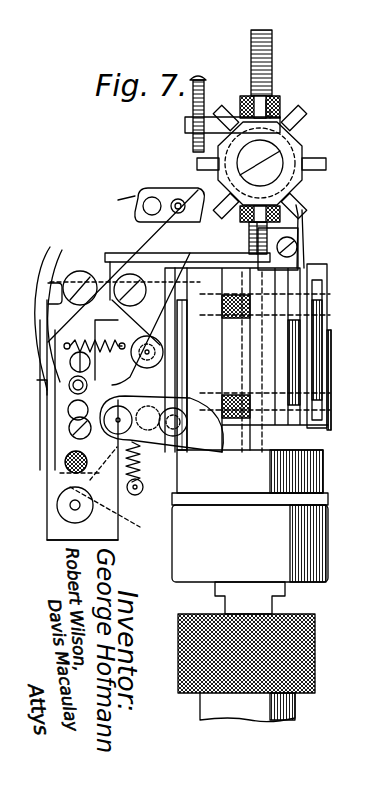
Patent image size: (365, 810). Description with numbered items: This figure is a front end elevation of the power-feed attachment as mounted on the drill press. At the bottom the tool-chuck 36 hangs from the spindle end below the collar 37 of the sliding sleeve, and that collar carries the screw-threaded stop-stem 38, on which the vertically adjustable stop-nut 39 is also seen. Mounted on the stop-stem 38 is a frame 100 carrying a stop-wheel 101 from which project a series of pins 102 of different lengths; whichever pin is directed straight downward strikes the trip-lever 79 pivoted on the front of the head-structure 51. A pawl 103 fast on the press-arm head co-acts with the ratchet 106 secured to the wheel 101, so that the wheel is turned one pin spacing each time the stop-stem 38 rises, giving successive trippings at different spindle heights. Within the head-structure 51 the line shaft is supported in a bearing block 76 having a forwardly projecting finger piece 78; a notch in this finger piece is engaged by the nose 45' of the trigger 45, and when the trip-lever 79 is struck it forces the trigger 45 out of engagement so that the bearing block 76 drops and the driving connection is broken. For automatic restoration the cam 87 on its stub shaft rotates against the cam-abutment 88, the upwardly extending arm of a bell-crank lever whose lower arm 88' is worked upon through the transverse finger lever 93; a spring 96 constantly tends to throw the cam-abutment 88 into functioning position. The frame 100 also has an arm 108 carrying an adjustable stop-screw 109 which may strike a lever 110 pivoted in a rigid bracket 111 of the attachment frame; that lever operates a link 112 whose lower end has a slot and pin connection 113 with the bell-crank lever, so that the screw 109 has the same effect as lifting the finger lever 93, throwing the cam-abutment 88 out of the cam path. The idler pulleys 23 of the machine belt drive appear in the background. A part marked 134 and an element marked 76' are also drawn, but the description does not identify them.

The stop-stem 38 is at (272, 48).
The adjustable stop-screw 109 is at (204, 90).
The frame 100 is at (290, 140).
The pins 102 is at (305, 120).
The stop-wheel 101 is at (300, 145).
The arm 108 is at (185, 125).
The ratchet 106 is at (197, 164).
The stop-nut 39 is at (300, 220).
The lever 110 is at (150, 188).
The rigid bracket 111 is at (118, 200).
The trip-lever 79 is at (112, 253).
The pawl 103 is at (297, 240).
The trigger 45 is at (125, 273).
The nose of trigger 45' is at (198, 315).
The idler pulleys 23 is at (327, 278).
The finger piece 78 is at (90, 340).
The link 112 is at (163, 352).
The slot and pin connection 113 is at (180, 395).
The finger lever 93 is at (195, 420).
The plate 134 is at (47, 396).
The cam 87 is at (105, 455).
The spring 96 is at (140, 460).
The lower arm of bell-crank lever 88' is at (144, 498).
The cam-abutment 88 is at (210, 492).
The head-structure 51 is at (118, 540).
The bearing block 76 is at (343, 381).
The rod 76' is at (347, 389).
The collar 37 is at (320, 560).
The tool-chuck 36 is at (315, 680).